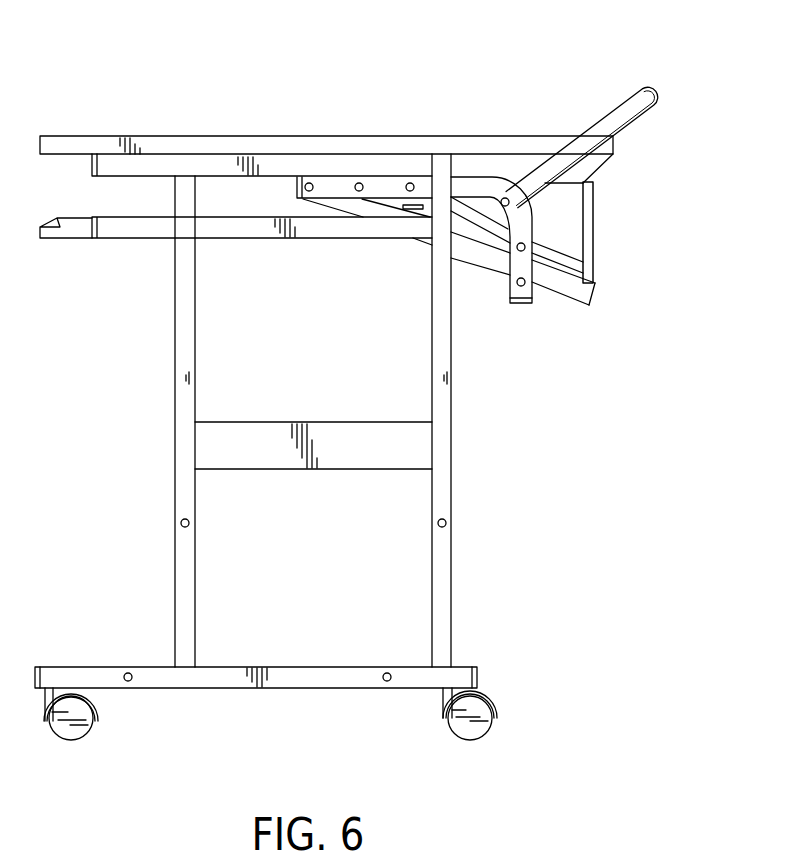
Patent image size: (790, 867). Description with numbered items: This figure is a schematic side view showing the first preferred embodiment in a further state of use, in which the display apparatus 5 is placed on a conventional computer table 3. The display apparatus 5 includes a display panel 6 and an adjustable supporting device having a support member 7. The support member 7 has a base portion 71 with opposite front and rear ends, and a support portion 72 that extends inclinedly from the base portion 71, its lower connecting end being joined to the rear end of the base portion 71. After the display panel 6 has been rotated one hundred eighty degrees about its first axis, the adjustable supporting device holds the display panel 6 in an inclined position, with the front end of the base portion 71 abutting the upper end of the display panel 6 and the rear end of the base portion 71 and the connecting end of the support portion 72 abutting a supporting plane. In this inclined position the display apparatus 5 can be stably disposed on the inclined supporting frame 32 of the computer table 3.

The conventional computer table 3 is at (74, 128).
The display apparatus 5 is at (580, 106).
The display panel 6 is at (616, 147).
The support member 7 is at (597, 246).
The base portion 71 is at (593, 201).
The support portion 72 is at (486, 222).
The inclined supporting frame 32 is at (594, 298).